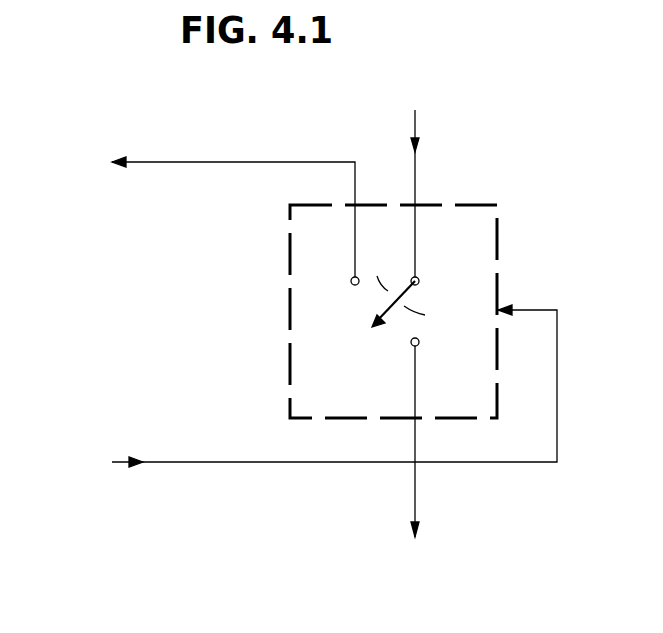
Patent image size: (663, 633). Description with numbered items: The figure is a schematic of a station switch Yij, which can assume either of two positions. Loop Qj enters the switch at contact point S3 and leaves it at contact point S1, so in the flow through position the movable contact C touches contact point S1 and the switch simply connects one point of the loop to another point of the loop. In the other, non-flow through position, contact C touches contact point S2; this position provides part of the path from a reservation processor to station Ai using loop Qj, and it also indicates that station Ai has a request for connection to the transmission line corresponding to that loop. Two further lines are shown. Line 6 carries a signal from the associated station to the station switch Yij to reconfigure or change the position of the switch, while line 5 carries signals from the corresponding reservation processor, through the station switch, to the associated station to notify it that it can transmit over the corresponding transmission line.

The line 5 is at (248, 162).
The line 6 is at (242, 463).
The contact point S1 is at (426, 454).
The contact point S2 is at (342, 281).
The contact point S3 is at (426, 183).
The contact C is at (398, 298).
The station switch Yij is at (498, 257).